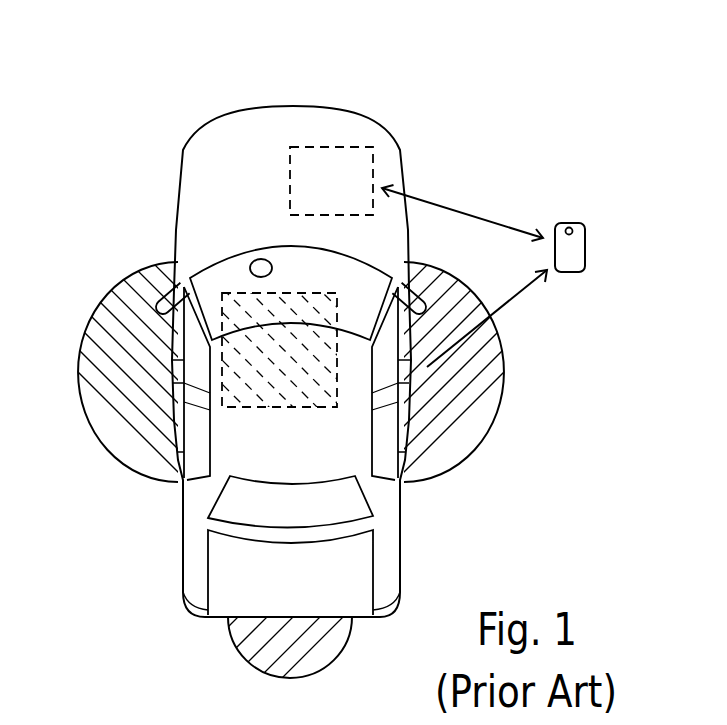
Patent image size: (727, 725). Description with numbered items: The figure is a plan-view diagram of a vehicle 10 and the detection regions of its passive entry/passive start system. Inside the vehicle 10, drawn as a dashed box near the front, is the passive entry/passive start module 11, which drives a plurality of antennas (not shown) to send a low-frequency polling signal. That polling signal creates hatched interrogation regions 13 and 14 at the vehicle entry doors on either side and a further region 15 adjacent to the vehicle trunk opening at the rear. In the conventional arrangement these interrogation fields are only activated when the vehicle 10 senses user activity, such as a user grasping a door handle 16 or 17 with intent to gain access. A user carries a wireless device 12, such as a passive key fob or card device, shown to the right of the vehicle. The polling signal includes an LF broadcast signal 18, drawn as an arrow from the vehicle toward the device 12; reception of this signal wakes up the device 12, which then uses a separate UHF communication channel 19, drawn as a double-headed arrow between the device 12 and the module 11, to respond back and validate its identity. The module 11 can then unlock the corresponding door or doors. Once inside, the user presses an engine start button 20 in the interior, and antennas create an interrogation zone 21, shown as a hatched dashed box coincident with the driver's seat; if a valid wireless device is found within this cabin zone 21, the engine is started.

The vehicle 10 is at (190, 135).
The passive entry/passive start (PEPS) module 11 is at (338, 147).
The wireless device 12 is at (586, 246).
The interrogation region 13 is at (107, 437).
The interrogation region 14 is at (472, 447).
The interrogation region adjacent trunk opening 15 is at (233, 645).
The door handle 16 is at (174, 365).
The door handle 17 is at (412, 372).
The LF broadcast signal 18 is at (513, 300).
The UHF communication channel 19 is at (459, 210).
The engine start button 20 is at (259, 258).
The interrogation zone 21 is at (267, 410).